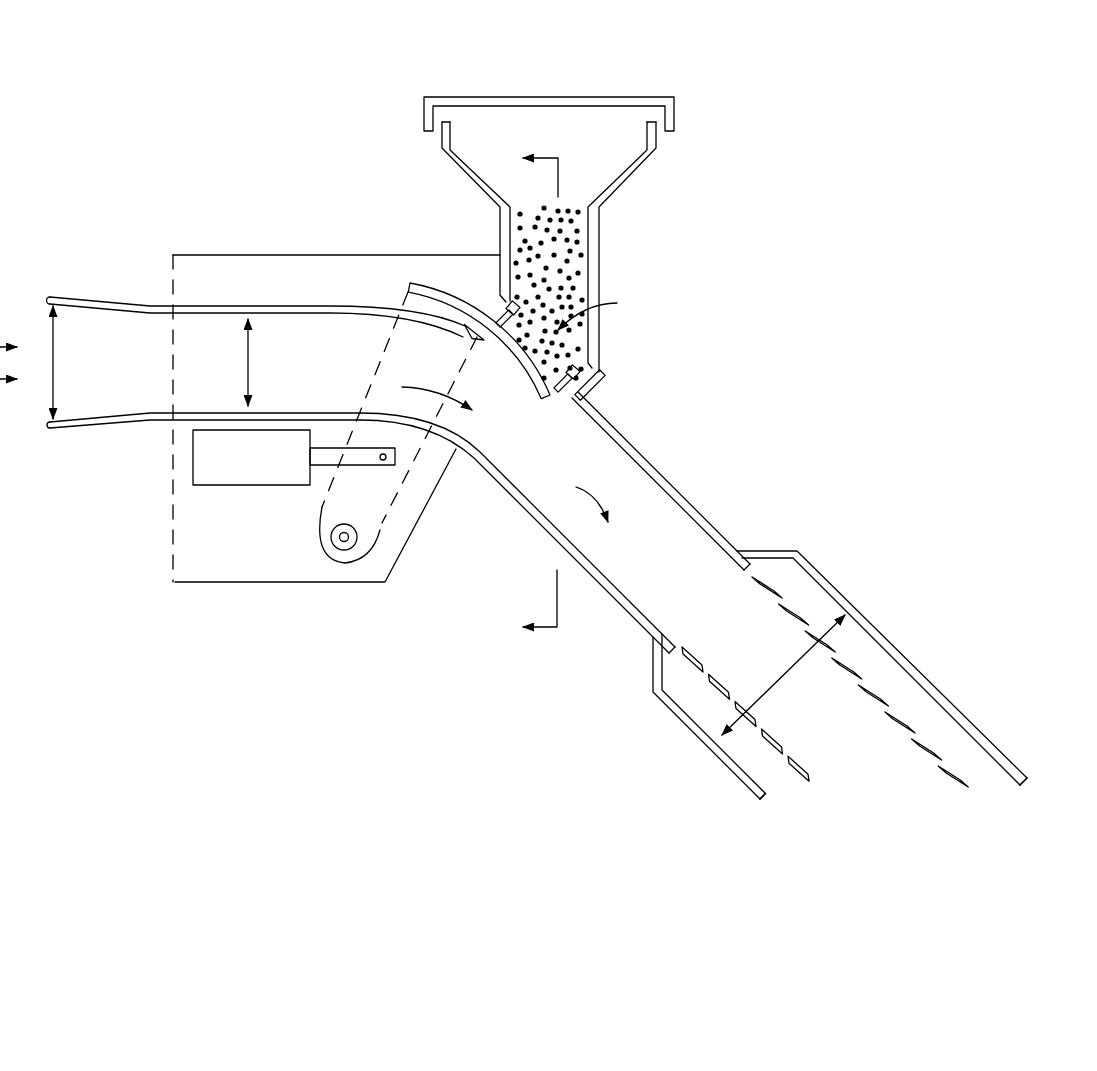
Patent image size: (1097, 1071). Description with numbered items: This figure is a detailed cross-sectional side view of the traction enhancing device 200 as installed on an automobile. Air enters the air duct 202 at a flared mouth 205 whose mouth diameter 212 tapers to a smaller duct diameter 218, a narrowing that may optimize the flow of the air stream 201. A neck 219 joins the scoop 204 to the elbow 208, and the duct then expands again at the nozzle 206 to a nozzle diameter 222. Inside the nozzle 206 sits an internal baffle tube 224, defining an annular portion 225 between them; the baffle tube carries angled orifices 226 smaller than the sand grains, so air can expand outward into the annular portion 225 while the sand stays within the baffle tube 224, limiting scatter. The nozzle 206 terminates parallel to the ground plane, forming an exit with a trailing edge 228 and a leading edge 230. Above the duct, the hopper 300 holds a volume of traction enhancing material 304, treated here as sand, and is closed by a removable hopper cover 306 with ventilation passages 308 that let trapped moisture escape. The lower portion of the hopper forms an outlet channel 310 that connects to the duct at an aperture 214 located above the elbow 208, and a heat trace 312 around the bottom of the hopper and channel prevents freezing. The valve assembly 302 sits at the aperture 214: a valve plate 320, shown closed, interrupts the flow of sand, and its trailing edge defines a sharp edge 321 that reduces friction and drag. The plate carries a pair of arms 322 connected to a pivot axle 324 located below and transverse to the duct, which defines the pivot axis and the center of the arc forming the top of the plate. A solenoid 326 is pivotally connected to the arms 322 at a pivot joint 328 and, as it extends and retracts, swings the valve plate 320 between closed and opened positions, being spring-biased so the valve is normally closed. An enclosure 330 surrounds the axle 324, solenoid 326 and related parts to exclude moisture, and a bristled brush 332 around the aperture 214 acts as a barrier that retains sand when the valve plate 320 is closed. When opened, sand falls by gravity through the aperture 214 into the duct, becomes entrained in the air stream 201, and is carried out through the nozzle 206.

The traction enhancing device 200 is at (840, 278).
The air stream 201 is at (428, 385).
The air duct 202 is at (256, 304).
The scoop 204 is at (70, 296).
The mouth 205 is at (42, 388).
The nozzle 206 is at (828, 574).
The elbow 208 is at (458, 466).
The mouth diameter 212 is at (55, 363).
The aperture 214 is at (607, 311).
The duct diameter 218 is at (252, 360).
The neck 219 is at (331, 306).
The nozzle diameter 222 is at (778, 675).
The internal baffle tube 224 is at (808, 782).
The annular portion 225 is at (978, 773).
The orifices 226 is at (703, 673).
The trailing edge 228 is at (1024, 777).
The leading edge 230 is at (757, 805).
The hopper 300 is at (706, 105).
The valve assembly 302 is at (398, 275).
The traction enhancing material 304 is at (572, 262).
The hopper cover 306 is at (548, 96).
The ventilation passages 308 is at (437, 127).
The outlet channel 310 is at (603, 345).
The heat trace 312 is at (597, 390).
The valve plate 320 is at (510, 357).
The sharp edge 321 is at (558, 394).
The arms 322 is at (384, 524).
The pivot axle 324 is at (347, 540).
The solenoid 326 is at (250, 487).
The pivot joint 328 is at (380, 456).
The enclosure 330 is at (173, 583).
The bristled brush 332 is at (508, 305).